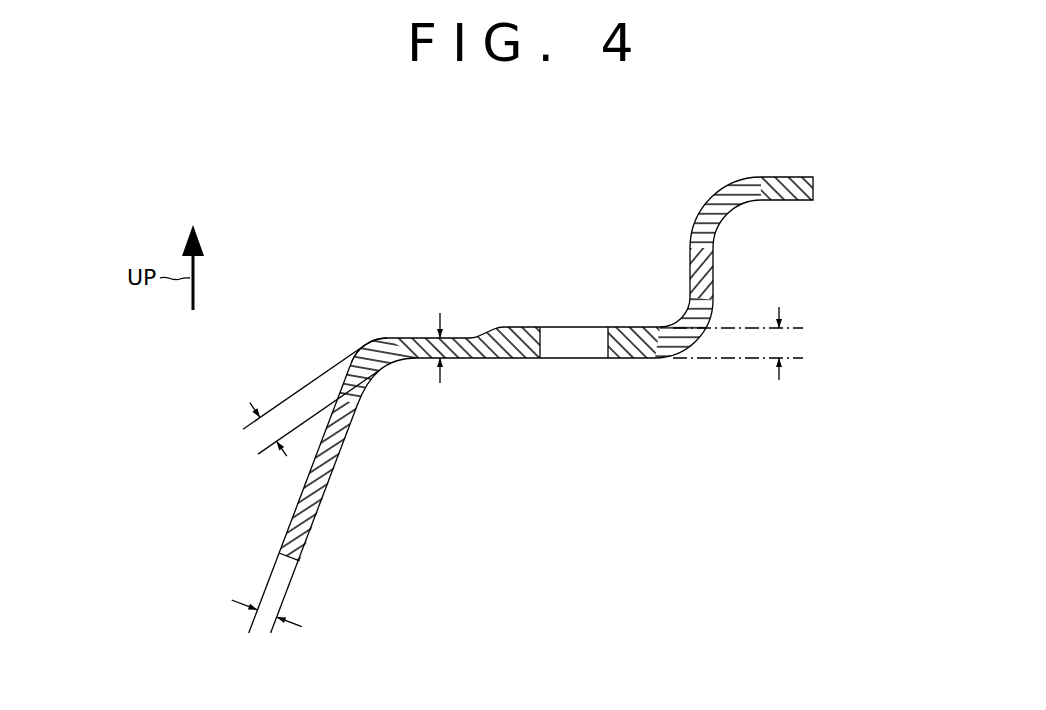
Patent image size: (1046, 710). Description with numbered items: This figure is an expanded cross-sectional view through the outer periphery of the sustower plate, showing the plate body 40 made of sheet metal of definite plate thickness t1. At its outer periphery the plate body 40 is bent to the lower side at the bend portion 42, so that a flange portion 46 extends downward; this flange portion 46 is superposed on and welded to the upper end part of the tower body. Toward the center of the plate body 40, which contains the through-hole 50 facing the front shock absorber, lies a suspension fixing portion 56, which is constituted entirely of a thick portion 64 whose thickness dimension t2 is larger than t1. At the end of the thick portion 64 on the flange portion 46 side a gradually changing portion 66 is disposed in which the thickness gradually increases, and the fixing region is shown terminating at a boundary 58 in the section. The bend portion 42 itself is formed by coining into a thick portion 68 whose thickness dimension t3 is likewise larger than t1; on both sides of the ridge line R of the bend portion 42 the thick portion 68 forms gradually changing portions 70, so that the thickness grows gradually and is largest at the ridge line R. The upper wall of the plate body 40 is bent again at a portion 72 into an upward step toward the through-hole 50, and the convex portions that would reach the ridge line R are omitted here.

The through-hole 50 is at (546, 374).
The flange portion 46 is at (323, 503).
The gradually changing portion 70 is at (362, 402).
The bend portion 42 is at (454, 305).
The thick portion 68 is at (383, 337).
The gradually changing portion 66 is at (488, 331).
The joint portion 58 is at (604, 345).
The suspension fixing portion 56 is at (642, 298).
The thick portion 64 is at (627, 327).
The plate body 40 is at (729, 182).
The upper bent portion 72 is at (704, 191).
The thickness dimension of sheet metal t1 is at (460, 359).
The thickness dimension of thick portion t2 is at (783, 345).
The thickness dimension of thick portion t3 is at (263, 450).
The ridge line R is at (367, 343).